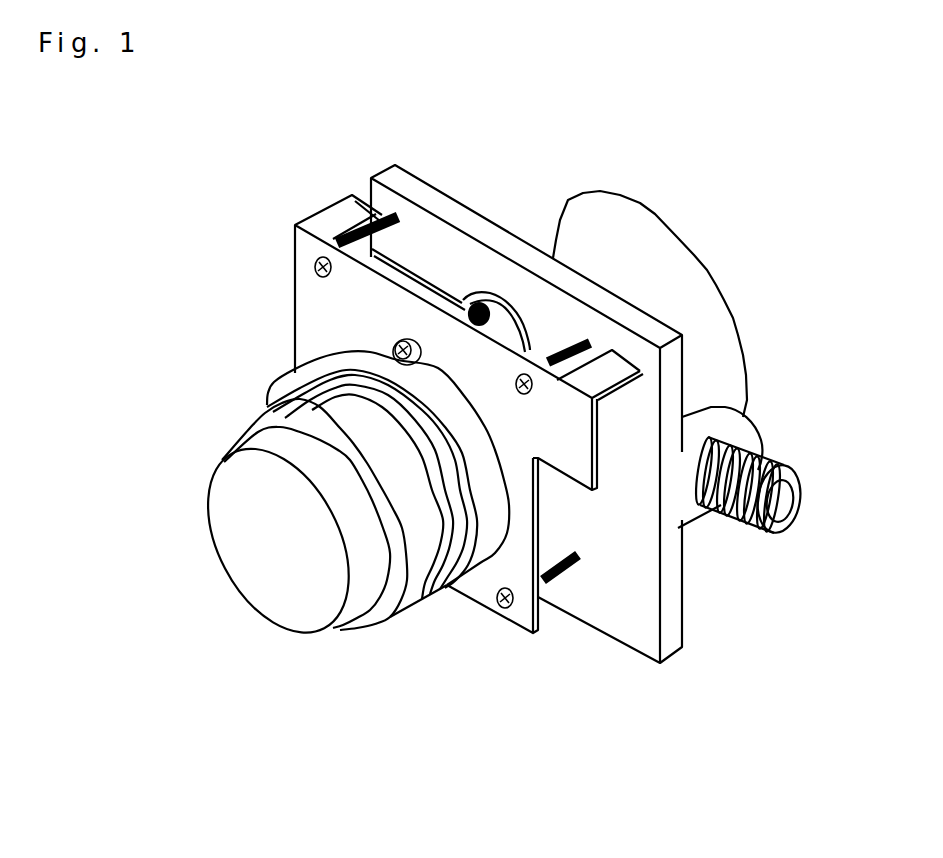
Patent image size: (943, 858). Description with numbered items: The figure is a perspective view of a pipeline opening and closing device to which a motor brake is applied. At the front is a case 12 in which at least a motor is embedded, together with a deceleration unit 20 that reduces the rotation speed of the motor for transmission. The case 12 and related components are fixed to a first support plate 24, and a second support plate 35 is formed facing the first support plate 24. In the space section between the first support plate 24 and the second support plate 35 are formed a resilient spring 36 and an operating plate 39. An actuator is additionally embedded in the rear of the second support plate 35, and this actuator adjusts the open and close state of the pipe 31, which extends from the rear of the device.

The case 12 is at (307, 607).
The deceleration unit 20 is at (345, 357).
The first support plate 24 is at (477, 587).
The pipe 31 is at (732, 503).
The second support plate 35 is at (624, 620).
The resilient spring 36 is at (479, 310).
The operating plate 39 is at (406, 270).